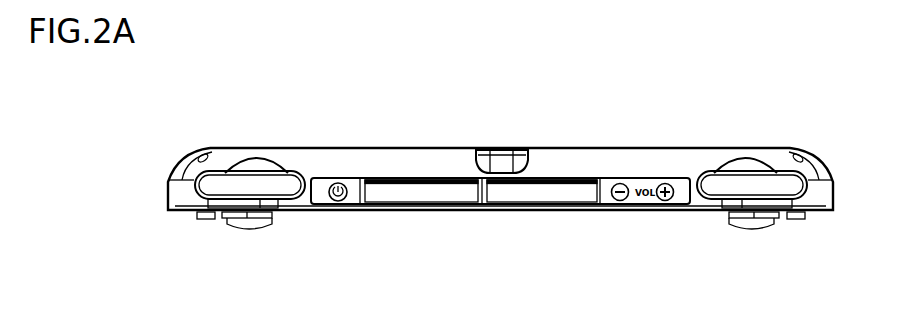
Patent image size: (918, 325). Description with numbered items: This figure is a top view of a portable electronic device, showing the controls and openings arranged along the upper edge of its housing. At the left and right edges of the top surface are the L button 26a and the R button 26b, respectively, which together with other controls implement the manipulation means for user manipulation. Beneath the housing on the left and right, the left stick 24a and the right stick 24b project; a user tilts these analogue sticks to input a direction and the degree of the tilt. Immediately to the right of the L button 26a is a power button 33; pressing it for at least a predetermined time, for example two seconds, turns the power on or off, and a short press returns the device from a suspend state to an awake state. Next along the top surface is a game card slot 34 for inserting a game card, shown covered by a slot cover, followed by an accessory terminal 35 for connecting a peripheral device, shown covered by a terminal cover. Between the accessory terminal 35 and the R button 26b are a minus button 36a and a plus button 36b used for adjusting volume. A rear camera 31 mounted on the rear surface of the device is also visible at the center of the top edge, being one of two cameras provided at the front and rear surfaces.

The L button 26a is at (264, 185).
The R button 26b is at (762, 185).
The rear camera 31 is at (500, 166).
The power button 33 is at (340, 206).
The game card slot 34 is at (420, 196).
The accessory terminal 35 is at (541, 196).
The minus button 36a is at (622, 206).
The plus button 36b is at (667, 183).
The left stick 24a is at (250, 229).
The right stick 24b is at (748, 229).